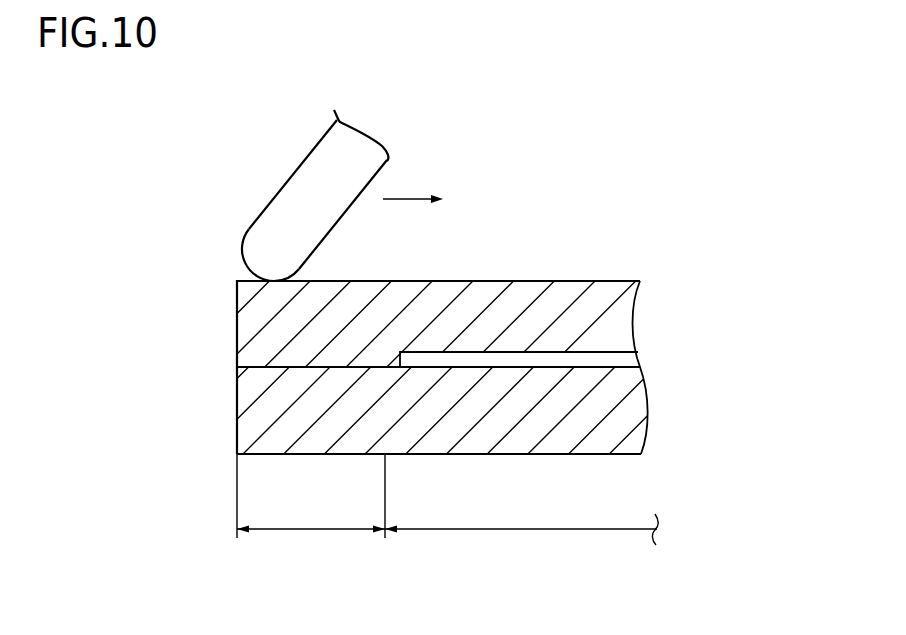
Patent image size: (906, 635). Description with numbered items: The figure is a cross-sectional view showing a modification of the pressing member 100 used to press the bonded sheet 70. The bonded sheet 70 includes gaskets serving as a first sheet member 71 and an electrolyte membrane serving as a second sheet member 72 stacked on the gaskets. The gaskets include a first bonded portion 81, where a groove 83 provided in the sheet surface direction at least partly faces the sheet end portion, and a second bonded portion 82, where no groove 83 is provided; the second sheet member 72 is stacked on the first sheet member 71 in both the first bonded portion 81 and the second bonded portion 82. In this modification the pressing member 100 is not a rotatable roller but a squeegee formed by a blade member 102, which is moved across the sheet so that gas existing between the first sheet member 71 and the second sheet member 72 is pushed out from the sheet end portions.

The pressing member 100 is at (228, 158).
The blade member 102 is at (283, 204).
The bonded sheet 70 is at (398, 338).
The first sheet member 71 is at (242, 298).
The second sheet member 72 is at (242, 428).
The groove 83 is at (468, 358).
The first bonded portion 81 is at (470, 530).
The second bonded portion 82 is at (312, 530).